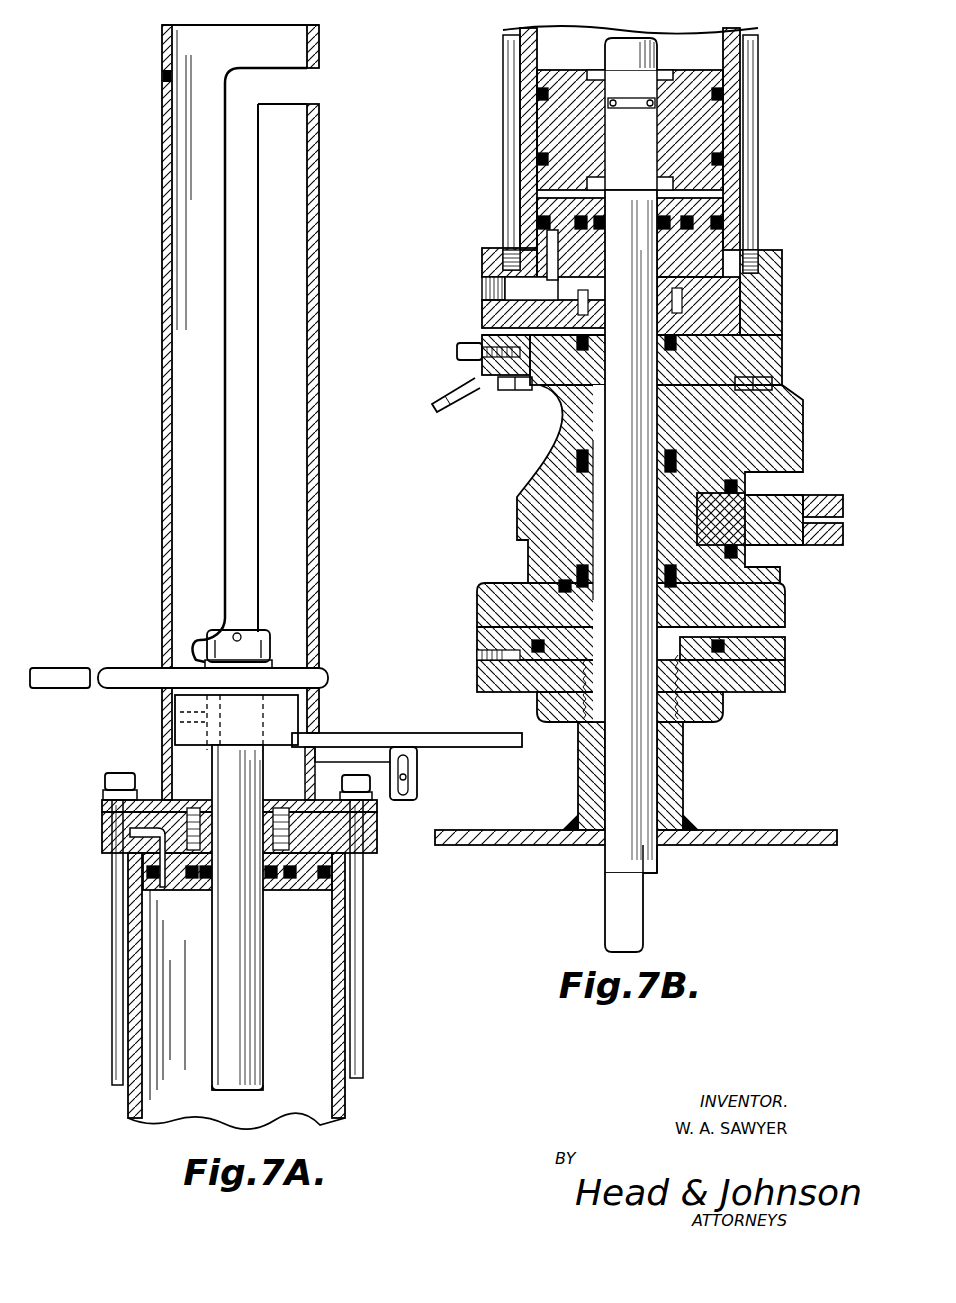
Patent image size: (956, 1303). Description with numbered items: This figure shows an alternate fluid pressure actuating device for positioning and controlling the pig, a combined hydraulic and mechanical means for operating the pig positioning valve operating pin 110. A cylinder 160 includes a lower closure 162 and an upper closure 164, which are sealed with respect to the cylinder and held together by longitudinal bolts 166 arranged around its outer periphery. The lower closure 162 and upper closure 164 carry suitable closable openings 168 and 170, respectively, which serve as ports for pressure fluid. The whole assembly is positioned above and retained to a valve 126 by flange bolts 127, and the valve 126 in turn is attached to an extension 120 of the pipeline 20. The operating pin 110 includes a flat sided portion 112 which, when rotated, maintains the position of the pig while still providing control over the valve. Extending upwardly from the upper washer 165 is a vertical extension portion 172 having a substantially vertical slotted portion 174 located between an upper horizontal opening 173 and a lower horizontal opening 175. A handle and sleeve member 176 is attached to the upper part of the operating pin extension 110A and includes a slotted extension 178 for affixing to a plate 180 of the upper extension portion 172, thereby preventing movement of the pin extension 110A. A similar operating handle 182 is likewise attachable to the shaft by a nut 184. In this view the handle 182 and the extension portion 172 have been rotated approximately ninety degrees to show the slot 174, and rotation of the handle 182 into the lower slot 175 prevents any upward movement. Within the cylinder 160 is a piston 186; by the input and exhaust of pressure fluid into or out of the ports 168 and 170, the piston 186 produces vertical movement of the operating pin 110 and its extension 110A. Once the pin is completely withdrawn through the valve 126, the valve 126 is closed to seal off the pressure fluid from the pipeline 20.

In FIG. 7B, the pipeline 20 is at (732, 830).
In FIG. 7B, the operating pin 110 is at (636, 917).
In FIG. 7A, the operating pin extension 110A is at (262, 960).
In FIG. 7B, the operating pin extension 110A is at (652, 55).
In FIG. 7B, the flat sided portion 112 is at (651, 893).
In FIG. 7B, the extension 120 is at (676, 770).
In FIG. 7B, the valve 126 is at (505, 472).
In FIG. 7B, the flange bolts 127 is at (512, 392).
In FIG. 7A, the cylinder 160 is at (346, 956).
In FIG. 7B, the lower closure 162 is at (488, 249).
In FIG. 7A, the upper closure 164 is at (378, 856).
In FIG. 7A, the upper washer 165 is at (378, 804).
In FIG. 7A, the longitudinal bolts 166 is at (113, 1030).
In FIG. 7B, the closable opening 168 is at (522, 294).
In FIG. 7A, the closable opening 170 is at (132, 838).
In FIG. 7A, the vertical extension portion 172 is at (163, 293).
In FIG. 7A, the upper horizontal opening 173 is at (298, 105).
In FIG. 7A, the slotted portion 174 is at (223, 173).
In FIG. 7A, the lower horizontal opening 175 is at (320, 672).
In FIG. 7A, the handle and sleeve member 176 is at (350, 740).
In FIG. 7A, the slotted extension 178 is at (417, 786).
In FIG. 7A, the plate 180 is at (375, 768).
In FIG. 7A, the operating handle 182 is at (55, 666).
In FIG. 7A, the nut 184 is at (255, 635).
In FIG. 7B, the piston 186 is at (716, 138).